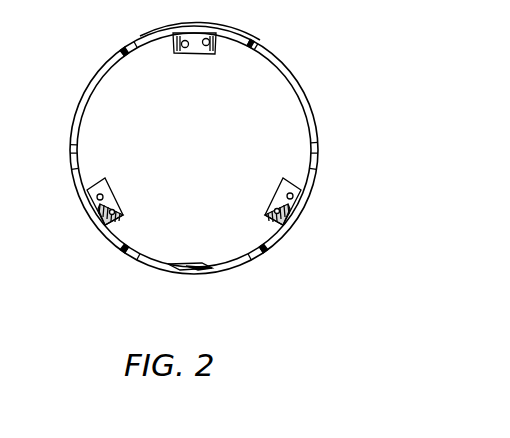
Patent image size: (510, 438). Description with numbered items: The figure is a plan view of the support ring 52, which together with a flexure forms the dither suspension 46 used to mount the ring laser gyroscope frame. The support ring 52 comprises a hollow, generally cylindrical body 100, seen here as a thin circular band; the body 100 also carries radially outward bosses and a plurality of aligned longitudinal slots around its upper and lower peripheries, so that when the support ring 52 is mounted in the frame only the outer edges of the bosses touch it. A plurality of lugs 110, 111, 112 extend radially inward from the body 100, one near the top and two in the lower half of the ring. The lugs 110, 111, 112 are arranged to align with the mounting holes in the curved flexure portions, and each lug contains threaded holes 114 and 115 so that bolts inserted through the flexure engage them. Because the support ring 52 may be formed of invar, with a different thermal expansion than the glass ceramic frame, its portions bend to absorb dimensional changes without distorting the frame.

The dither suspension 46 is at (306, 92).
The support ring 52 is at (340, 167).
The hollow, generally cylindrical body 100 is at (288, 74).
The lug 110 is at (277, 199).
The lug 111 is at (205, 55).
The lug 112 is at (110, 192).
The threaded hole 114 is at (279, 215).
The threaded hole 115 is at (293, 196).